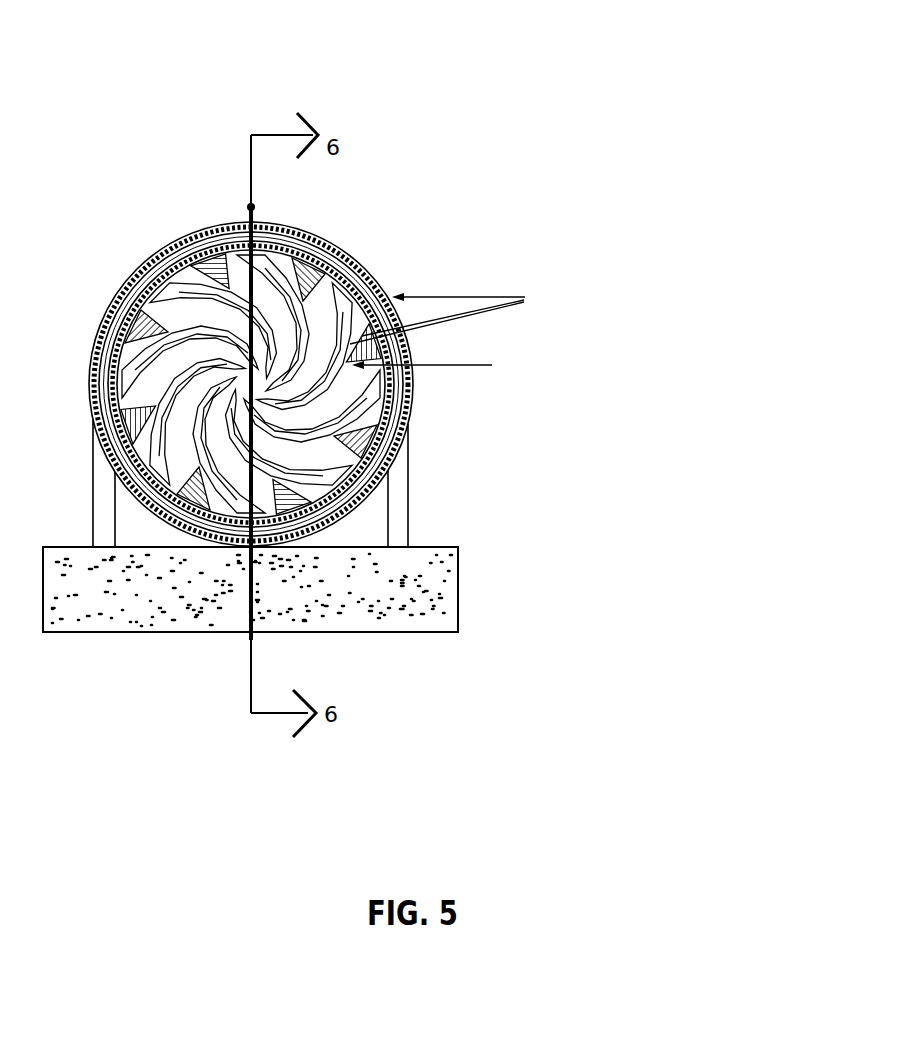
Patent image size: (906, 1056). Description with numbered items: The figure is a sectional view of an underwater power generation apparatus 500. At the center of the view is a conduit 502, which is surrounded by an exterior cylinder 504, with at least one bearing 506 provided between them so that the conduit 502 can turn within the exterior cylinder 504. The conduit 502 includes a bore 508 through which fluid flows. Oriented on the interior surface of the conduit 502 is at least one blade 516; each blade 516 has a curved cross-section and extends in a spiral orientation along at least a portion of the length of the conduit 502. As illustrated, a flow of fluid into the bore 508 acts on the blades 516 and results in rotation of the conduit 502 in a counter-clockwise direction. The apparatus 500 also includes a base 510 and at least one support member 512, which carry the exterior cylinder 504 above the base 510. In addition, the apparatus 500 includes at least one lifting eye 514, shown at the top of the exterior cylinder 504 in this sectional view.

The underwater power generation apparatus 500 is at (113, 68).
The conduit 502 is at (113, 331).
The exterior cylinder 504 is at (170, 247).
The bearing 506 is at (131, 279).
The bore 508 is at (120, 440).
The base 510 is at (436, 597).
The support member 512 is at (408, 492).
The lifting eye 514 is at (262, 207).
The blade 516 is at (385, 330).